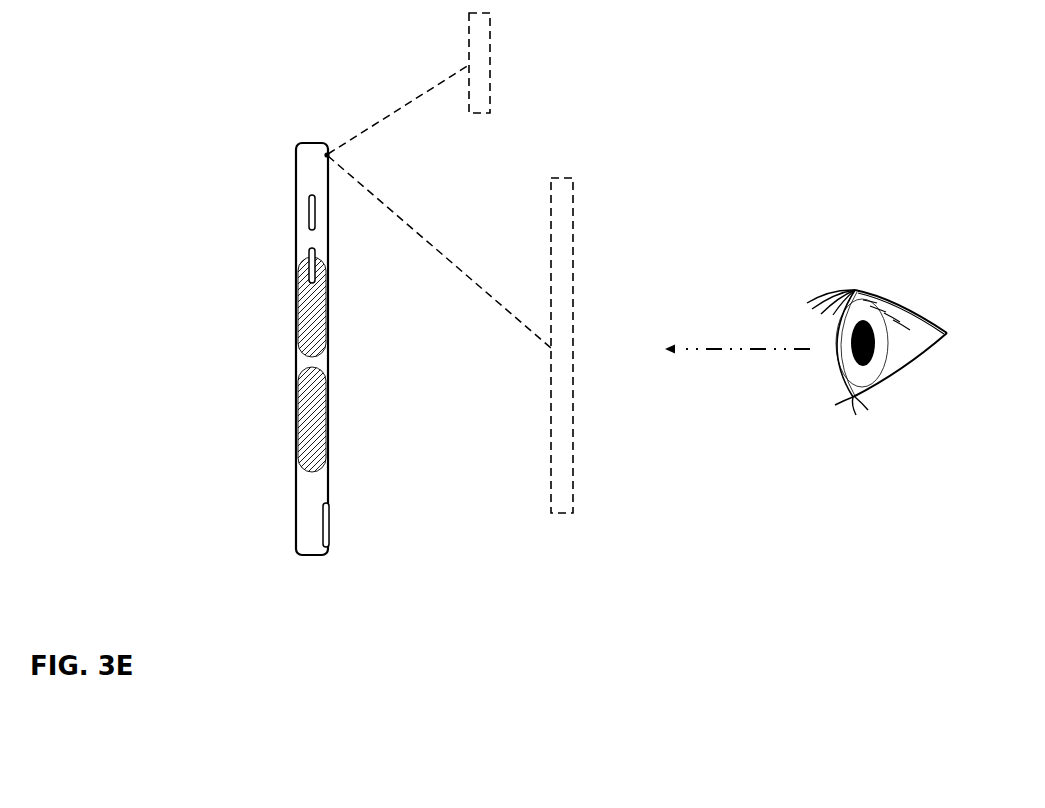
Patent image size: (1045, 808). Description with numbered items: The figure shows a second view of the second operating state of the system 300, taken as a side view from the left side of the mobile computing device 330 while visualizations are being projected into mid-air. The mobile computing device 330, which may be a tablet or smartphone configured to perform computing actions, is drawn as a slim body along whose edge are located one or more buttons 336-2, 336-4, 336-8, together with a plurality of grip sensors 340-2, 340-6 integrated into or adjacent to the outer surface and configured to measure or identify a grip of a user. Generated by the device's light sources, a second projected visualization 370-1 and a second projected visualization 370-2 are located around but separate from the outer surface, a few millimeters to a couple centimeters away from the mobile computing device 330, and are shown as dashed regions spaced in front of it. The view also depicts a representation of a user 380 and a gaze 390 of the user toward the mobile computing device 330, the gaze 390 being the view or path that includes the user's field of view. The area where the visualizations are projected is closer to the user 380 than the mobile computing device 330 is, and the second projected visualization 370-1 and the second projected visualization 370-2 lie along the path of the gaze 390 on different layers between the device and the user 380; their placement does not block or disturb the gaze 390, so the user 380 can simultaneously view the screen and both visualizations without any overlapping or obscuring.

The system 300 is at (134, 67).
The mobile computing device 330 is at (256, 520).
The button 336-2 is at (309, 213).
The button 336-4 is at (307, 266).
The button 336-8 is at (329, 523).
The grip sensor 340-2 is at (299, 323).
The grip sensor 340-6 is at (305, 420).
The second projected visualization 370-1 is at (454, 37).
The second projected visualization 370-2 is at (561, 158).
The user 380 is at (880, 268).
The gaze 390 is at (733, 303).